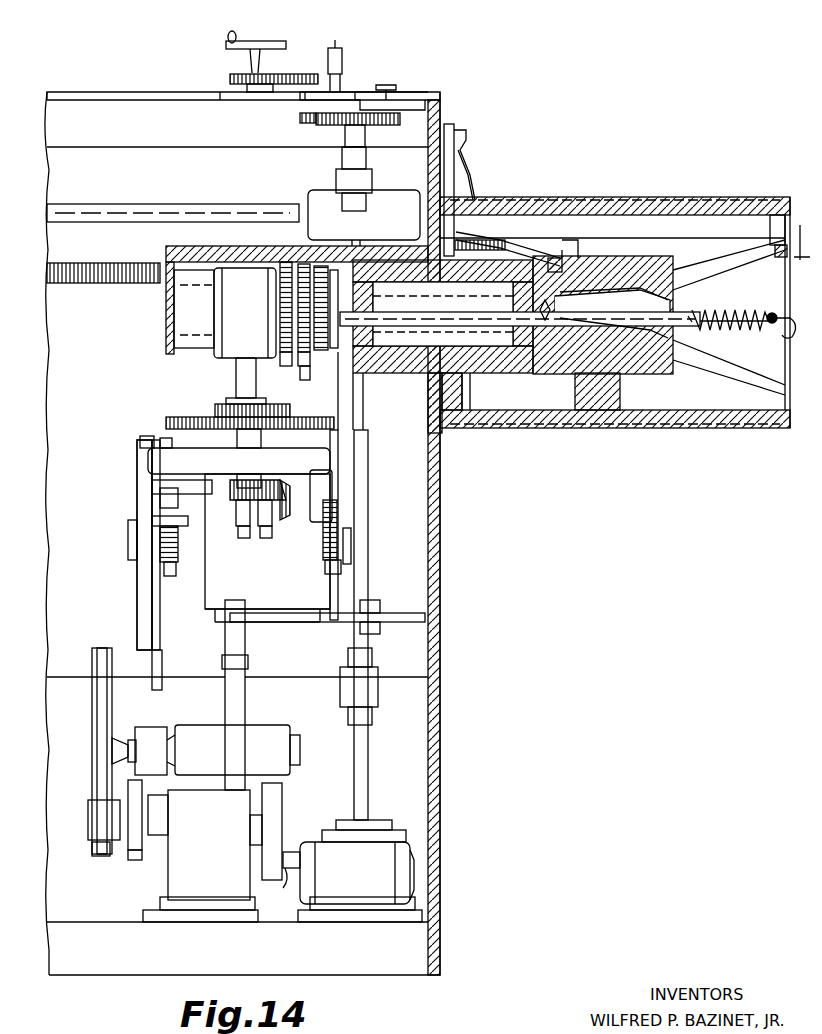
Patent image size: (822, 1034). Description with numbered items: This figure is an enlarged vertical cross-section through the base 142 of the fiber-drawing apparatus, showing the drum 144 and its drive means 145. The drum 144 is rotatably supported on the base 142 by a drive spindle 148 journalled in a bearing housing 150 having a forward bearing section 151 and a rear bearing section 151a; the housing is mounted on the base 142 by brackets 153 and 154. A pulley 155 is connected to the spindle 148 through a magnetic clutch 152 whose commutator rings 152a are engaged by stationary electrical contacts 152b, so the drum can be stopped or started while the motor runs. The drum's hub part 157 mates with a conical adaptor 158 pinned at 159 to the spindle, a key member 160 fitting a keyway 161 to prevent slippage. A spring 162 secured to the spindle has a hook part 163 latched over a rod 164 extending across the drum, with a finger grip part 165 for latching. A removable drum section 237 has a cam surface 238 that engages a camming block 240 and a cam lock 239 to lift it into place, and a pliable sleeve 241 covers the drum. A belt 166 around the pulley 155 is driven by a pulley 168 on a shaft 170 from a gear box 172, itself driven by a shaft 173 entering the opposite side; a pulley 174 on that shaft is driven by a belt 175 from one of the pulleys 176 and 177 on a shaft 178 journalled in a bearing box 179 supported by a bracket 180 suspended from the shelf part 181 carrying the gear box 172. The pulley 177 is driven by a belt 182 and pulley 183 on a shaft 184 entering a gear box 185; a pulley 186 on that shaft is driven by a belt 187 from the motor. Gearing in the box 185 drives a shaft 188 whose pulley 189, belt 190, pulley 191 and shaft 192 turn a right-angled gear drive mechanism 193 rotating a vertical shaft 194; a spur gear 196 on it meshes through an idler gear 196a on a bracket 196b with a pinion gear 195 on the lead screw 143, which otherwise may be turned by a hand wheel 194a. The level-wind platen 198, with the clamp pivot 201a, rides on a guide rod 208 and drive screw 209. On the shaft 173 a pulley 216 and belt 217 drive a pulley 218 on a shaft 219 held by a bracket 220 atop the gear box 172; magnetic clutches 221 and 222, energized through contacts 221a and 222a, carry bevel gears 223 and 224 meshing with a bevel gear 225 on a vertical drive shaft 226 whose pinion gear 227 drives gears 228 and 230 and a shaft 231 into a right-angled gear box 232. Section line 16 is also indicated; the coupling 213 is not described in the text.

The section line 16 is at (134, 400).
The base 142 is at (209, 78).
The lead screw 143 is at (336, 70).
The drum 144 is at (630, 190).
The drive means 145 is at (120, 440).
The drive spindle 148 is at (488, 318).
The bearing housing 150 is at (390, 362).
The forward bearing section 151 is at (470, 296).
The rear bearing section 151a is at (185, 296).
The magnetic clutch 152 is at (250, 290).
The commutator rings 152a is at (285, 368).
The stationary electrical contacts 152b is at (300, 268).
The bracket 153 is at (284, 300).
The bracket 154 is at (440, 435).
The pulley 155 is at (366, 395).
The hub part 157 is at (600, 374).
The conical adaptor 158 is at (620, 290).
The pin 159 is at (546, 325).
The key member 160 is at (558, 258).
The keyway 161 is at (582, 250).
The spring 162 is at (730, 324).
The hook part 163 is at (772, 313).
The rod 164 is at (770, 324).
The finger grip part 165 is at (790, 318).
The belt 166 is at (340, 500).
The pulley 168 is at (345, 562).
The shaft 170 is at (348, 535).
The gear box 172 is at (282, 596).
The shaft 173 is at (160, 550).
The pulley 174 is at (130, 528).
The belt 175 is at (140, 592).
The pulley 176 is at (160, 728).
The pulley 177 is at (94, 702).
The shaft 178 is at (128, 745).
The bearing box 179 is at (198, 735).
The bracket 180 is at (238, 692).
The shelf part 181 is at (306, 622).
The belt 182 is at (98, 724).
The pulley 183 is at (90, 806).
The shaft 184 is at (150, 830).
The gear box 185 is at (188, 890).
The pulley 186 is at (116, 845).
The belt 187 is at (134, 855).
The shaft 188 is at (262, 812).
The pulley 189 is at (282, 818).
The belt 190 is at (284, 870).
The pulley 191 is at (262, 888).
The shaft 192 is at (302, 875).
The right-angled gear drive mechanism 193 is at (412, 858).
The vertically extending shaft 194 is at (368, 742).
The hand wheel 194a is at (255, 45).
The pinion gear 195 is at (300, 118).
The spur gear 196 is at (345, 128).
The idler gear 196a is at (428, 103).
The bracket 196b is at (392, 94).
The platen 198 is at (456, 124).
The pivot 201a is at (466, 134).
The guide rod 208 is at (116, 210).
The drive screw 209 is at (92, 268).
The coupling 213 is at (390, 196).
The pulley 216 is at (156, 536).
The belt 217 is at (160, 498).
The pulley 218 is at (205, 490).
The shaft 219 is at (138, 470).
The bracket 220 is at (152, 520).
The magnetic clutch 221 is at (243, 536).
The electrical contacts 221a is at (266, 540).
The magnetic clutch 222 is at (266, 524).
The electrical contacts 222a is at (286, 522).
The bevel gear 223 is at (215, 490).
The bevel gear 224 is at (335, 480).
The bevel gear 225 is at (262, 460).
The vertical drive shaft 226 is at (262, 438).
The pinion gear 227 is at (240, 400).
The gear 228 is at (225, 410).
The gear 230 is at (180, 420).
The shaft 231 is at (304, 380).
The right-angled gear box 232 is at (244, 352).
The section 237 is at (715, 212).
The cam surface 238 is at (486, 238).
The cam lock 239 is at (782, 240).
The camming block 240 is at (515, 233).
The sleeve 241 is at (668, 428).